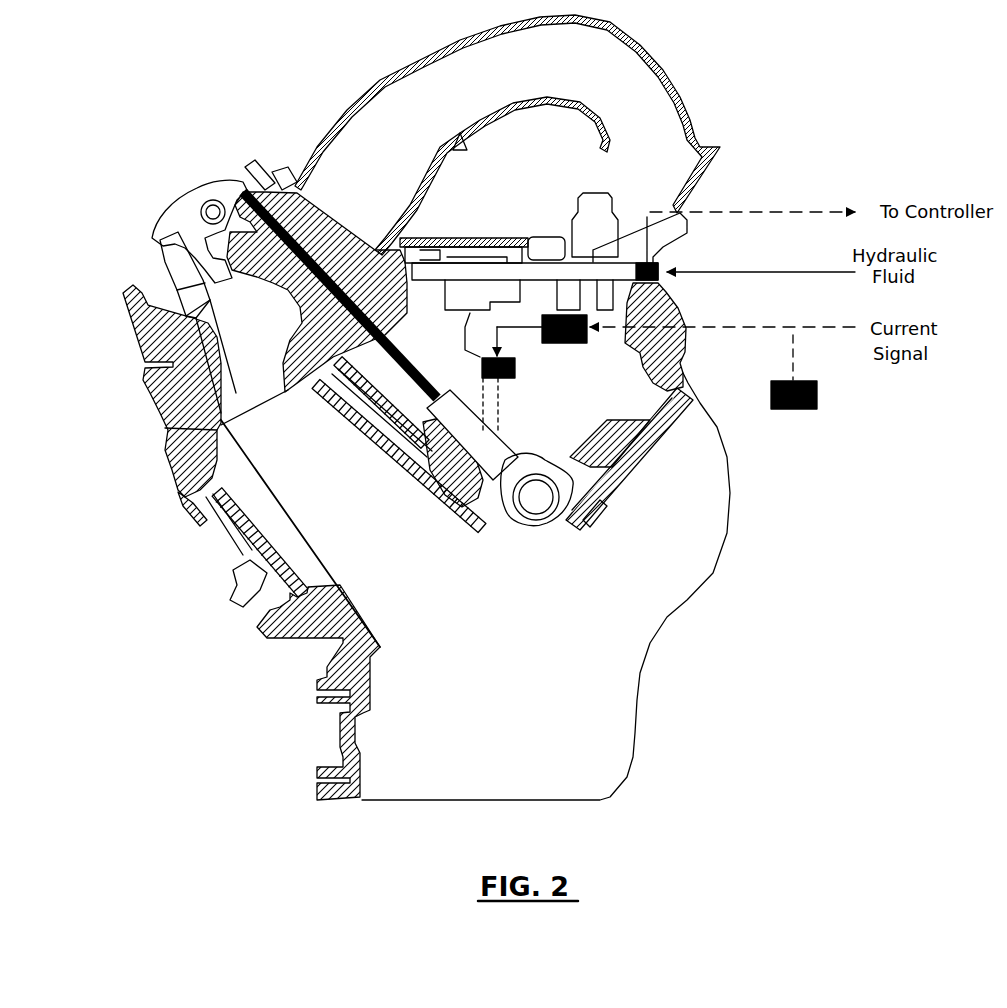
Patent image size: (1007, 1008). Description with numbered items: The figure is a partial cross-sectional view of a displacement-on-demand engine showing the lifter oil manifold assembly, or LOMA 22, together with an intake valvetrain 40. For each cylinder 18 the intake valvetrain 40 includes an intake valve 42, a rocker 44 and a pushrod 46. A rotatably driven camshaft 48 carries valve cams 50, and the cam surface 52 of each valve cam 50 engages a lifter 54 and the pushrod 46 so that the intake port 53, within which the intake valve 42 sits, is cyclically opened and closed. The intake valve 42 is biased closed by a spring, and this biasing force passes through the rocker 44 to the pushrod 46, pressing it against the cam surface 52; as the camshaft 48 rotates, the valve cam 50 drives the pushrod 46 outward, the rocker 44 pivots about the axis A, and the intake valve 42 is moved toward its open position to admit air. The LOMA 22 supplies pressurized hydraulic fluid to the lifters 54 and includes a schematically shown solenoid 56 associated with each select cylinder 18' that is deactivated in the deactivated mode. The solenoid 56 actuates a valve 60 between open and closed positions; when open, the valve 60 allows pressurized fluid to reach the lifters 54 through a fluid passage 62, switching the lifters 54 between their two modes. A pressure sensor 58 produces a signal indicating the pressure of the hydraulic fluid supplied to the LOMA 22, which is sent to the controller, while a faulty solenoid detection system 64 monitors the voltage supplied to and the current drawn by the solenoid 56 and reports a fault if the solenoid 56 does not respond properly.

The cylinder 18 is at (479, 541).
The select cylinder 18' is at (232, 547).
The lifter oil manifold assembly (LOMA) 22 is at (562, 236).
The intake valvetrain 40 is at (222, 140).
The intake valve 42 is at (155, 260).
The rocker 44 is at (157, 213).
The axis A is at (213, 213).
The pushrod 46 is at (415, 387).
The camshaft 48 is at (537, 493).
The valve cam 50 is at (557, 510).
The cam surface 52 is at (587, 483).
The intake port 53 is at (175, 428).
The lifter 54 is at (470, 440).
The solenoid 56 is at (565, 340).
The pressure sensor 58 is at (625, 257).
The valve 60 is at (477, 363).
The fluid passage 62 is at (500, 395).
The faulty solenoid detection system 64 is at (817, 397).